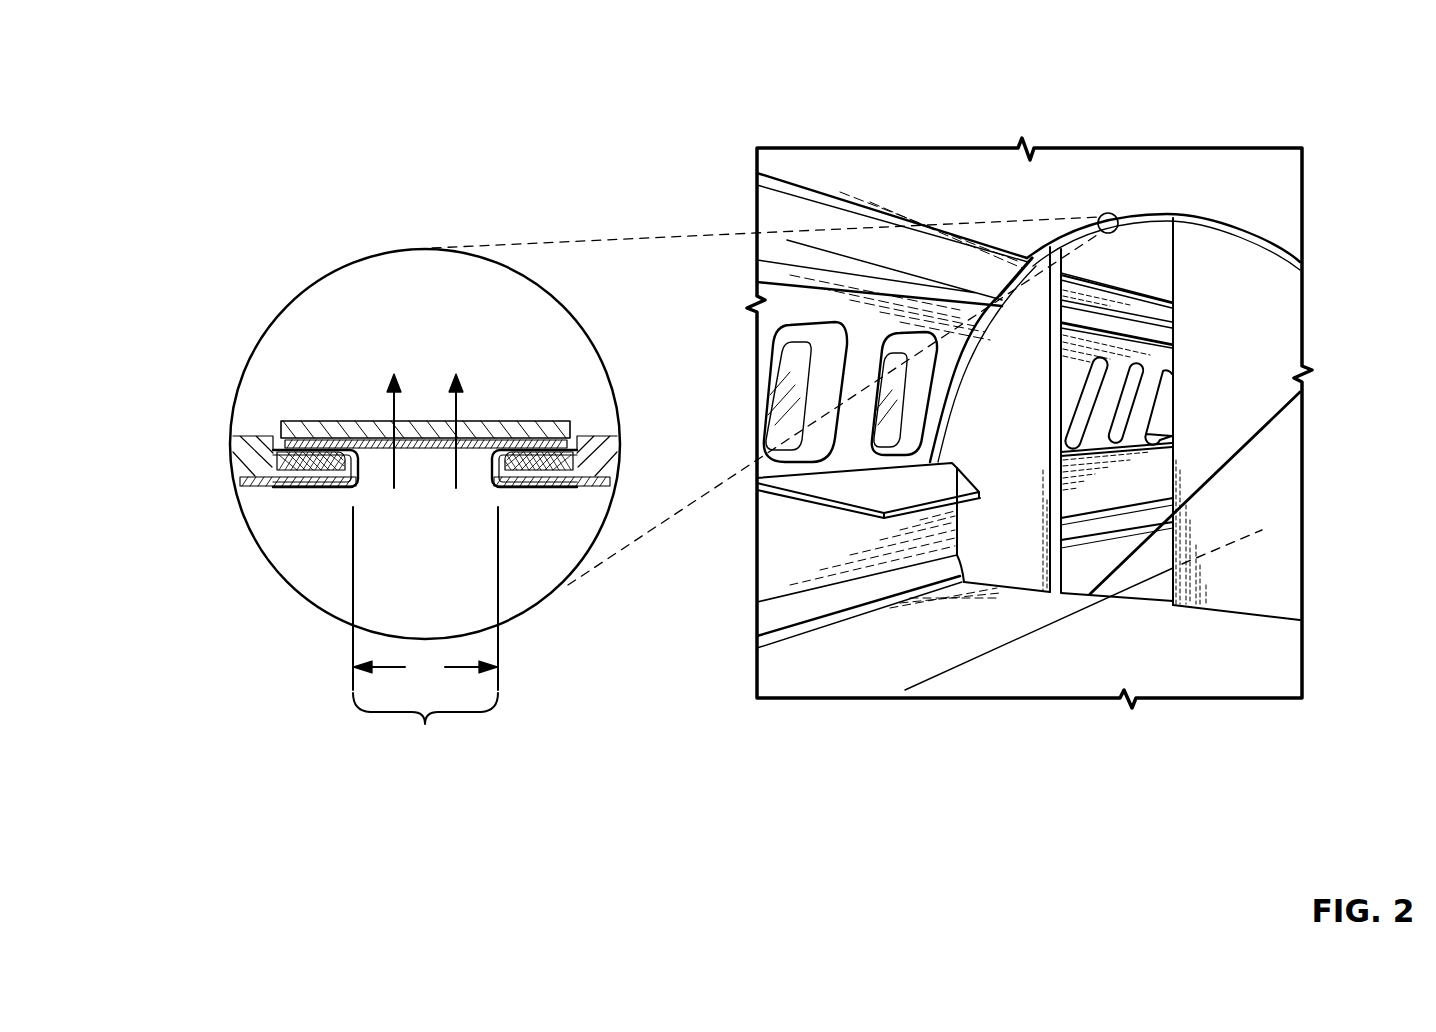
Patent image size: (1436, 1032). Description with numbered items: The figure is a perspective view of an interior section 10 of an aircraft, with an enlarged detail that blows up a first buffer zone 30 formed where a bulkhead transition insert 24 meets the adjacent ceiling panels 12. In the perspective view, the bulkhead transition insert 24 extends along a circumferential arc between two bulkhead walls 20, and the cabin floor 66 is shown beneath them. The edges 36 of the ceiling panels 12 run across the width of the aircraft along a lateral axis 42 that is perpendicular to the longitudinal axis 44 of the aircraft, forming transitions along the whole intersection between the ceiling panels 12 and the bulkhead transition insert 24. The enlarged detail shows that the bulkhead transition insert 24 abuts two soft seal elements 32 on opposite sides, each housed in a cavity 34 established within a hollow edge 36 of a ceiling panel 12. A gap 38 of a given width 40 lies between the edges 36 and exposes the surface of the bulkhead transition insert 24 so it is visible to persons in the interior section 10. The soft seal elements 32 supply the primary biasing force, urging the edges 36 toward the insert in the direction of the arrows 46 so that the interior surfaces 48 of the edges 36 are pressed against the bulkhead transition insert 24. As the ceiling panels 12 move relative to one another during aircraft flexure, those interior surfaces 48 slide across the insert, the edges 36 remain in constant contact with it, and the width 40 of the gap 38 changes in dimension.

The interior section 10 is at (892, 74).
The ceiling panels 12 is at (247, 447).
The bulkhead 20 is at (1019, 407).
The bulkhead transition insert 24 is at (424, 448).
The first buffer zone 30 is at (286, 230).
The soft seal elements 32 is at (278, 462).
The cavities 34 is at (290, 474).
The edges 36 is at (318, 490).
The gap 38 is at (425, 724).
The width 40 is at (425, 598).
The lateral axis 42 is at (1300, 392).
The longitudinal axis 44 is at (1262, 530).
The arrows 46 is at (424, 415).
The interior surfaces 48 is at (283, 442).
The floor 66 is at (1254, 664).